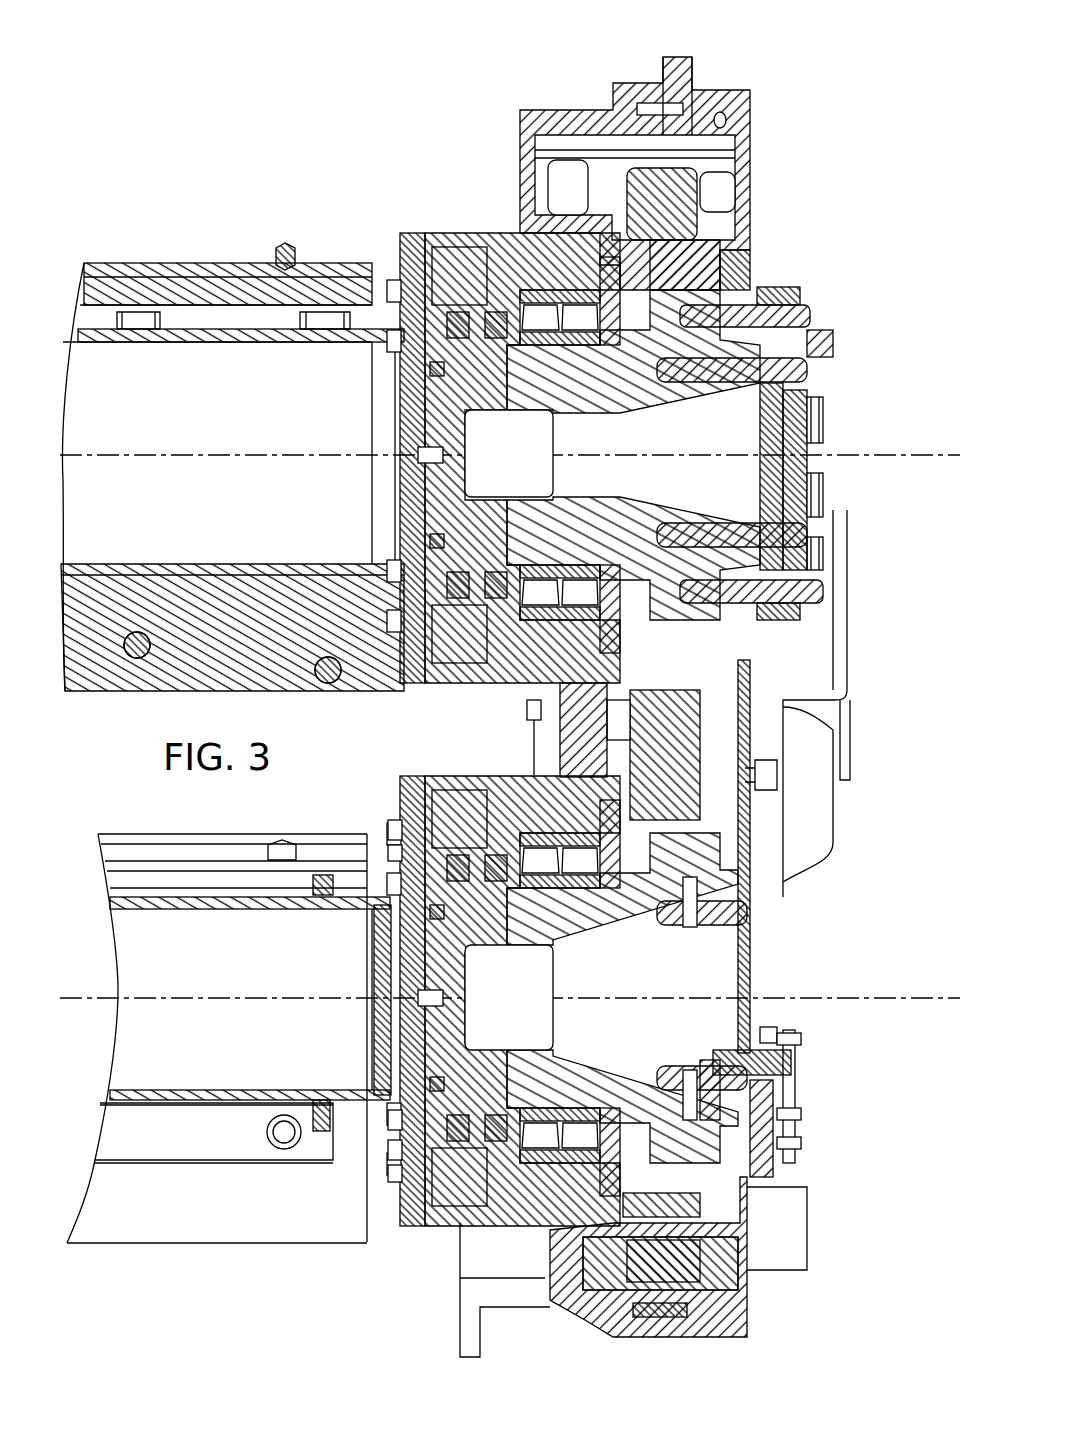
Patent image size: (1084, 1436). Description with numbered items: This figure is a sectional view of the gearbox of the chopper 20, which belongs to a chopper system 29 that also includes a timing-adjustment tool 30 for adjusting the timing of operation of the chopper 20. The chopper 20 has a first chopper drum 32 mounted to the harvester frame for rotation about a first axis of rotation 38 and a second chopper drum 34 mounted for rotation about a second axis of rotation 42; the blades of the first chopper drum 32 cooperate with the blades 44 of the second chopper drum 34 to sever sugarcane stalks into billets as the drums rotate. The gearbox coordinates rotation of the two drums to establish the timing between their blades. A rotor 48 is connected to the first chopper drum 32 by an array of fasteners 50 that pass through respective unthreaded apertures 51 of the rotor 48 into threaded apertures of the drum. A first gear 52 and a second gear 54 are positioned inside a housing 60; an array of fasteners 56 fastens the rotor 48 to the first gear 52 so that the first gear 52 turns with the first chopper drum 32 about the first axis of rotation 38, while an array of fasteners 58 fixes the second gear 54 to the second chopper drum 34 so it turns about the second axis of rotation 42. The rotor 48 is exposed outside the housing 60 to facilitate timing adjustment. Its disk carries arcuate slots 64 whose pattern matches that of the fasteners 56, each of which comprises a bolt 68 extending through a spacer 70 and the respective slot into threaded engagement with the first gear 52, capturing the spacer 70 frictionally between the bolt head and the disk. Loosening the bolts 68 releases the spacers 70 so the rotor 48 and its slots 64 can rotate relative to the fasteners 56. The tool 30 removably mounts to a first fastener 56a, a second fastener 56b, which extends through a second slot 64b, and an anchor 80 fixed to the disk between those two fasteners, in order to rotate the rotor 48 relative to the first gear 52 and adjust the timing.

The chopper 20 is at (289, 103).
The chopper system 29 is at (163, 36).
The timing-adjustment tool 30 is at (829, 1085).
The first chopper drum 32 is at (244, 224).
The second chopper drum 34 is at (164, 1278).
The first axis of rotation 38 is at (140, 458).
The second axis of rotation 42 is at (180, 1000).
The blades 44 is at (268, 1188).
The rotor 48 is at (738, 480).
The fasteners 50 is at (700, 383).
The apertures 51 is at (807, 363).
The first gear 52 is at (680, 197).
The second gear 54 is at (660, 743).
The fasteners 56 is at (823, 488).
The first fastener 56a is at (823, 428).
The second fastener 56b is at (897, 270).
The fasteners 58 is at (650, 790).
The housing 60 is at (750, 120).
The slots 64 is at (797, 617).
The second slot 64b is at (767, 288).
The bolt 68 is at (800, 308).
The spacer 70 is at (800, 295).
The anchor 80 is at (833, 345).